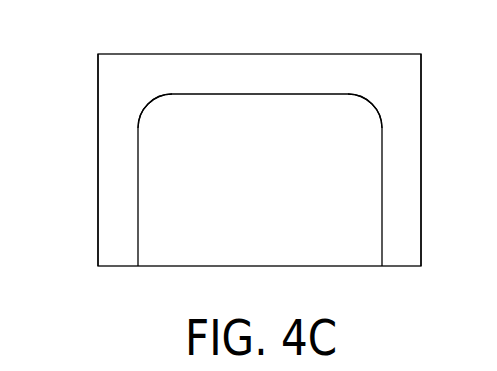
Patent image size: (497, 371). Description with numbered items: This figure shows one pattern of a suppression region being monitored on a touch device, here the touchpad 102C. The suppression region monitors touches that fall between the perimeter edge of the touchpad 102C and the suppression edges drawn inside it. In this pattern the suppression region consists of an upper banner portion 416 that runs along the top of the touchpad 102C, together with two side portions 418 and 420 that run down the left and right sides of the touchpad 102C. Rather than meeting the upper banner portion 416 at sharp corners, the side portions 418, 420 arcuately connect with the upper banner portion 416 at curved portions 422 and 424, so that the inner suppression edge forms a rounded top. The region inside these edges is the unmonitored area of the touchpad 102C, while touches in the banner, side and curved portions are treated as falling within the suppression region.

The upper banner portion 416 is at (243, 67).
The side portion 418 is at (108, 152).
The side portion 420 is at (412, 190).
The curved portion 422 is at (148, 108).
The curved portion 424 is at (370, 108).
The touchpad 102C is at (290, 193).